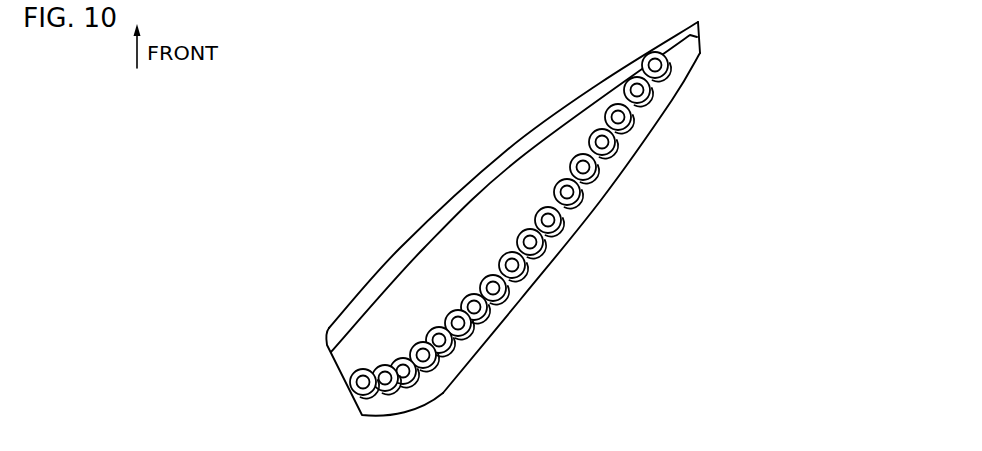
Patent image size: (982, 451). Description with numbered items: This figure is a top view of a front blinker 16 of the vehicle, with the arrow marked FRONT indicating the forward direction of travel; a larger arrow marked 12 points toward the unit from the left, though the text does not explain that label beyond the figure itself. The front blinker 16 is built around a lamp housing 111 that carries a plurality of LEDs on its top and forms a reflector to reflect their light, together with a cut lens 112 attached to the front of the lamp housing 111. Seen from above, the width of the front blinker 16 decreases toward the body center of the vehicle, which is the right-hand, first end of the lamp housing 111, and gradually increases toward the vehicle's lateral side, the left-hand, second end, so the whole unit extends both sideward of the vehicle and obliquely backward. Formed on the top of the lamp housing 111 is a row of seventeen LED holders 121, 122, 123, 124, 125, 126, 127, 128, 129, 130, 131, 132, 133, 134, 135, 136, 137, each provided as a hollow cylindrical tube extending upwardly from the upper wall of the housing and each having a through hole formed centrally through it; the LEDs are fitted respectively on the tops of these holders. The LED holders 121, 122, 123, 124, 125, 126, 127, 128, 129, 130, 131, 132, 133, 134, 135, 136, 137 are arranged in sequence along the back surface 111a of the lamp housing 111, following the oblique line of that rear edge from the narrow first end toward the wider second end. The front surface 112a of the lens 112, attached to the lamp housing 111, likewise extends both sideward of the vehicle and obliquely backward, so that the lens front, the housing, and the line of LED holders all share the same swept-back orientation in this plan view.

The light source unit 12 is at (360, 183).
The front blinker 16 is at (475, 110).
The lamp housing 111 is at (703, 46).
The back surface 111a is at (591, 219).
The cut lens 112 is at (478, 192).
The front surface 112a is at (400, 250).
The LED holder 121 is at (668, 72).
The LED holder 122 is at (649, 100).
The LED holder 123 is at (631, 124).
The LED holder 124 is at (613, 150).
The LED holder 125 is at (595, 172).
The LED holder 126 is at (580, 195).
The LED holder 127 is at (560, 228).
The LED holder 128 is at (553, 254).
The LED holder 129 is at (533, 276).
The LED holder 130 is at (518, 303).
The LED holder 131 is at (497, 326).
The LED holder 132 is at (483, 348).
The LED holder 133 is at (460, 360).
The LED holder 134 is at (447, 372).
The LED holder 135 is at (410, 382).
The LED holder 136 is at (384, 370).
The LED holder 137 is at (352, 382).